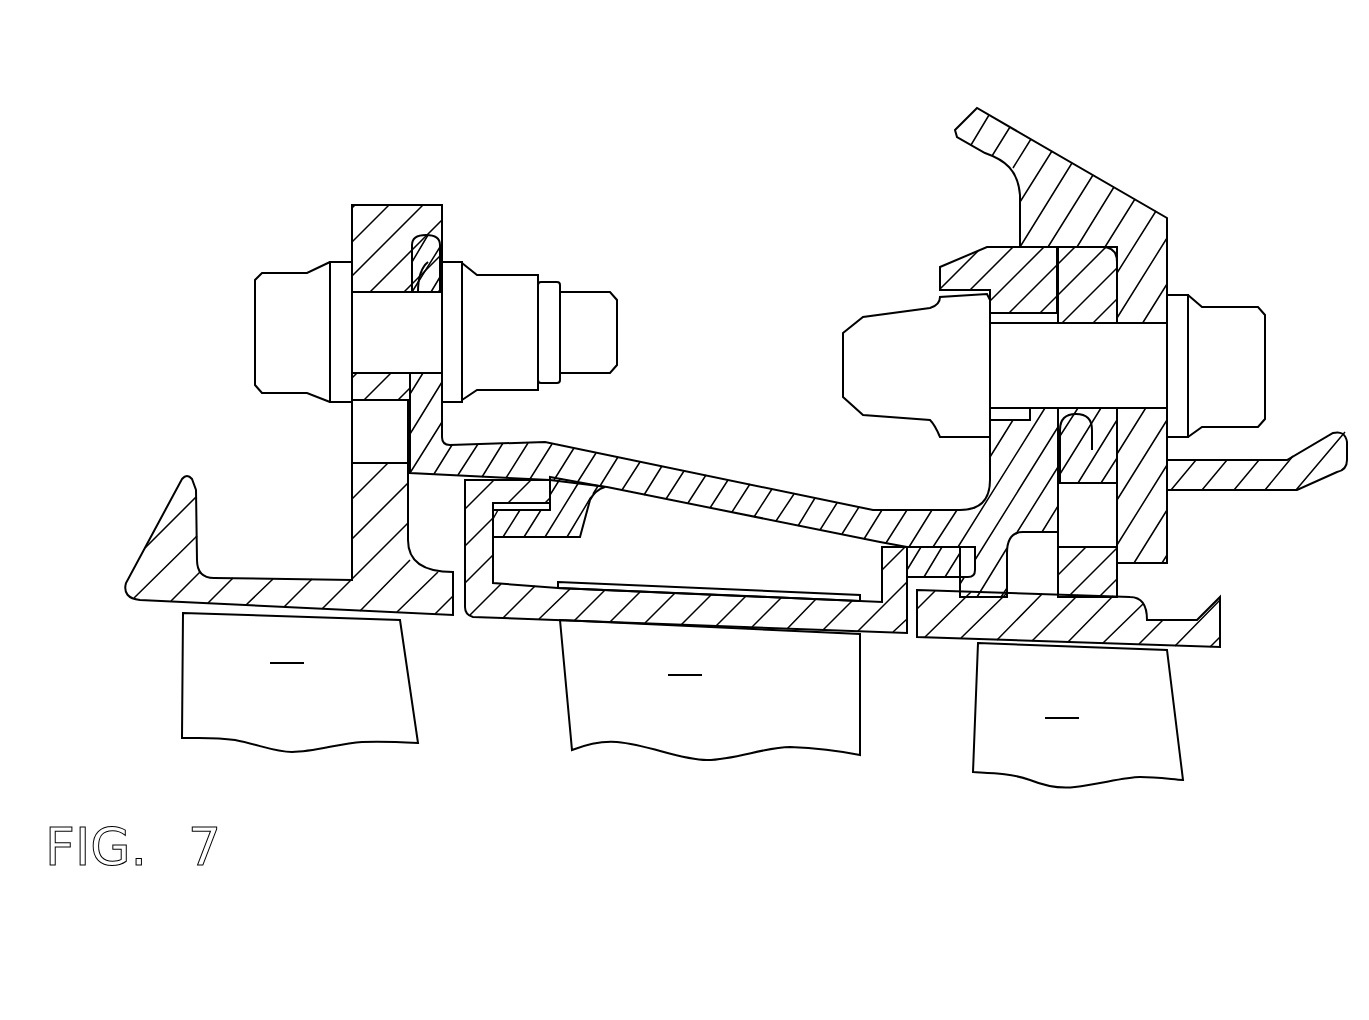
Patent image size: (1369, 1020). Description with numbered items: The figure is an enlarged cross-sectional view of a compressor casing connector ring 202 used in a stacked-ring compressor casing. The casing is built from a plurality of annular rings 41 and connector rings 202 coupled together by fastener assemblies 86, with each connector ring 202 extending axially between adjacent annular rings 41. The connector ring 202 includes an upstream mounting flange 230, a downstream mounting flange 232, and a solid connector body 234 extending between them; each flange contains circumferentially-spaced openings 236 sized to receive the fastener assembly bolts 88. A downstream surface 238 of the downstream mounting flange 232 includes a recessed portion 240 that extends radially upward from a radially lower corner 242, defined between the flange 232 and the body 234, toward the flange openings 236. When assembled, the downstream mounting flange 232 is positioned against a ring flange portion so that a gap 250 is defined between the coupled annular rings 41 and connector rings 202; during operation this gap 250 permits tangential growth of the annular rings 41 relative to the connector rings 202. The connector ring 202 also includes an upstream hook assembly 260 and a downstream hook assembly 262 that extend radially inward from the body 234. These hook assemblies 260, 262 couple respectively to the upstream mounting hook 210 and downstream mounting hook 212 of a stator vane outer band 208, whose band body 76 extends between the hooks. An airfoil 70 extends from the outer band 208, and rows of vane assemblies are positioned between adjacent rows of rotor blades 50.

The annular ring 41 is at (390, 203).
The fastener assembly bolt 88 is at (283, 272).
The airfoil 70 is at (540, 278).
The fastener assembly 86 is at (1247, 302).
The rotor blade 50 is at (682, 700).
The band body 76 is at (685, 600).
The connector ring 202 is at (782, 399).
The outer band 208 is at (707, 591).
The upstream mounting hook 210 is at (493, 598).
The downstream mounting hook 212 is at (893, 577).
The upstream mounting flange 230 is at (430, 250).
The downstream mounting flange 232 is at (975, 262).
The connector body 234 is at (728, 490).
The opening 236 is at (422, 295).
The downstream surface 238 is at (1092, 415).
The recessed portion 240 is at (1040, 570).
The radially lower corner 242 is at (1072, 544).
The gap 250 is at (1072, 478).
The upstream hook assembly 260 is at (530, 525).
The downstream hook assembly 262 is at (947, 540).